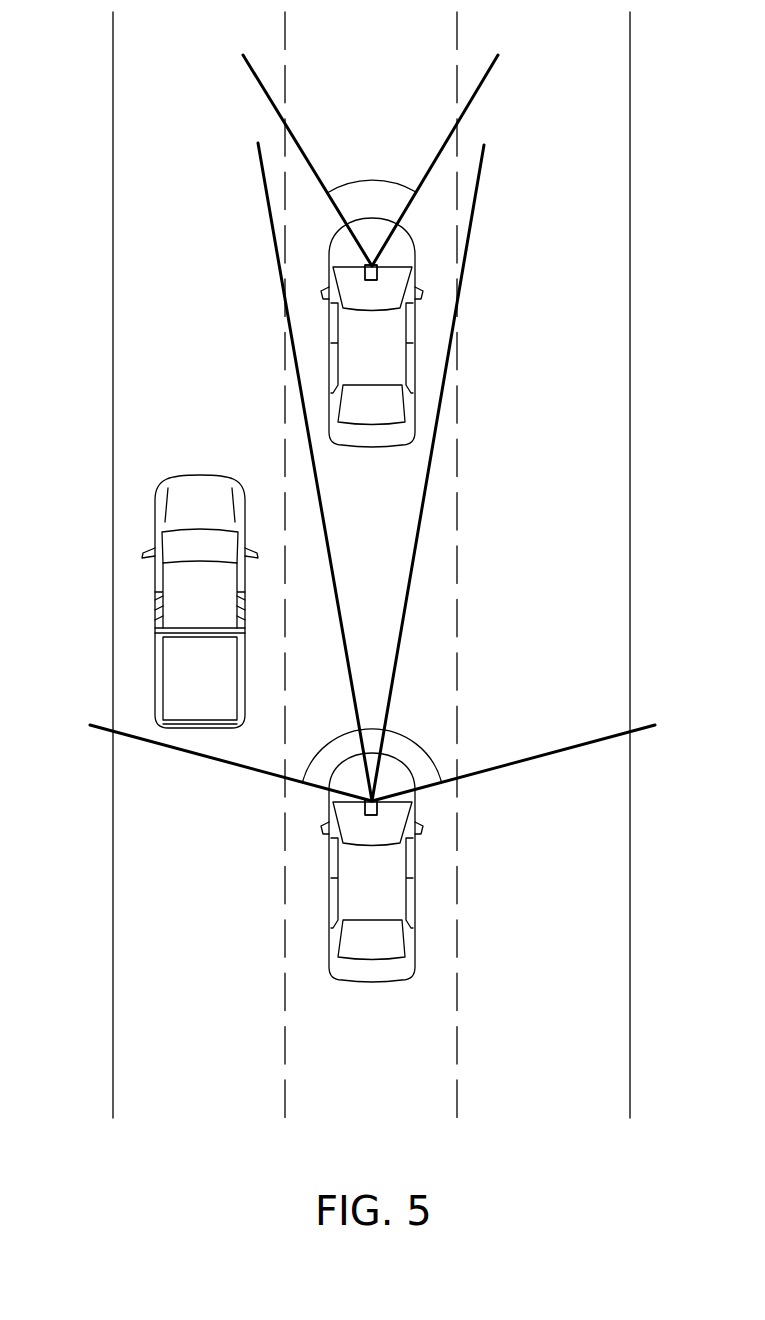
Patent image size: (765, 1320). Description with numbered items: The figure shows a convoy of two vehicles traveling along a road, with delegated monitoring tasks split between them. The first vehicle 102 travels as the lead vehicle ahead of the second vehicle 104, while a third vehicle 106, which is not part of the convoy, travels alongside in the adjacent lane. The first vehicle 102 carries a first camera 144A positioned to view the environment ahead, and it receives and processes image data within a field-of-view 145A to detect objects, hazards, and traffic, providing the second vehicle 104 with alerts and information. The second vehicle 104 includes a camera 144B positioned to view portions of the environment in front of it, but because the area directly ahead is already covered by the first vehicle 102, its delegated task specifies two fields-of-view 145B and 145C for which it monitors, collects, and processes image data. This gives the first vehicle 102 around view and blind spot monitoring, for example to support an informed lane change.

The first vehicle 102 is at (372, 445).
The second vehicle 104 is at (365, 976).
The third vehicle 106 is at (200, 474).
The first camera 144A is at (378, 271).
The camera 144B is at (382, 806).
The field-of-view 145A is at (362, 180).
The field-of-view 145B is at (302, 768).
The field-of-view 145C is at (430, 748).